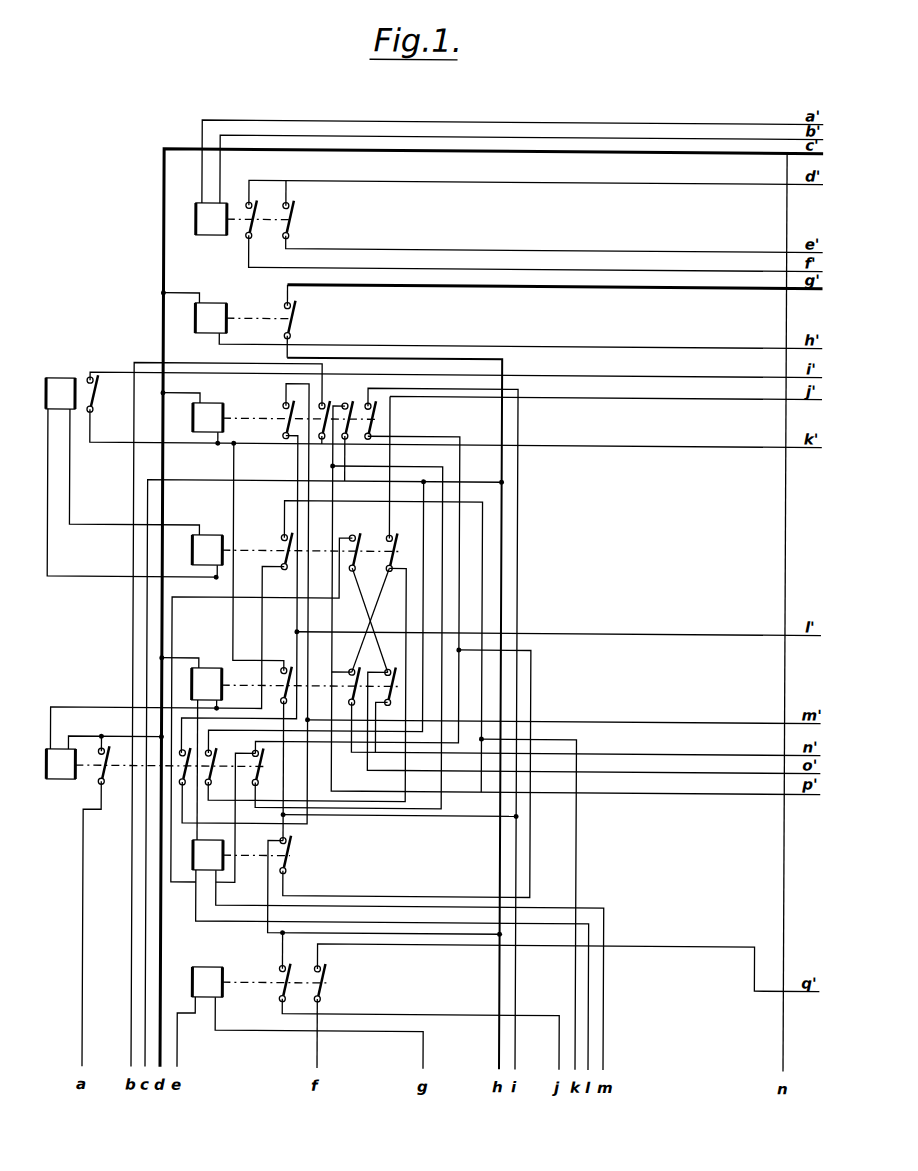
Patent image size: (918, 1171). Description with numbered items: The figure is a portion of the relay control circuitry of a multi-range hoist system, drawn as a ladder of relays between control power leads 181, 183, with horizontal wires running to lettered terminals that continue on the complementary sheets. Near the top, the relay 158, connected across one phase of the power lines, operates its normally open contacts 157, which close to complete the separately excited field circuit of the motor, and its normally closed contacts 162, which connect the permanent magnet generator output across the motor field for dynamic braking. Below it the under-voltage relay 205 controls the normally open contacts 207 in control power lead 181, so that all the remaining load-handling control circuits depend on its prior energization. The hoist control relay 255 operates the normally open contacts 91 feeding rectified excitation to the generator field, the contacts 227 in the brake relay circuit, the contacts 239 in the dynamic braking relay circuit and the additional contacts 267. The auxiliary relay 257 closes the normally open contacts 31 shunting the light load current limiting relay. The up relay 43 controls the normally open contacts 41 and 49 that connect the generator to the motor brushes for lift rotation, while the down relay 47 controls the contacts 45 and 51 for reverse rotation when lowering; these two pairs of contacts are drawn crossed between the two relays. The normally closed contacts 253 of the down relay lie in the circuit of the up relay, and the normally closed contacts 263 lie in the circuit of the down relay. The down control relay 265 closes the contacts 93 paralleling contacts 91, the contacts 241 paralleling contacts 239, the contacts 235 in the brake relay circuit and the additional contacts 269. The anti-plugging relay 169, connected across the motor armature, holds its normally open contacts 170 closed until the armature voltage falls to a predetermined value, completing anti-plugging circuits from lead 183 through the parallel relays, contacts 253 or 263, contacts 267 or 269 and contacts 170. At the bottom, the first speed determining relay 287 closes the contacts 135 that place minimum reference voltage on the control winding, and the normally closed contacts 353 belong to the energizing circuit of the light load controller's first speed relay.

The normally open contacts 31 is at (87, 378).
The normally open contacts 41 is at (393, 534).
The up relay 43 is at (218, 557).
The normally open contacts 45 is at (391, 668).
The down relay 47 is at (218, 691).
The normally open contacts 49 is at (359, 526).
The normally open contacts 51 is at (350, 669).
The normally open contacts 91 is at (283, 403).
The normally open contacts 93 is at (186, 750).
The normally open contacts 135 is at (323, 966).
The normally open contacts 157 is at (289, 203).
The relay 158 is at (222, 227).
The normally closed contacts 162 is at (256, 192).
The anti-plugging relay 169 is at (222, 862).
The normally open contacts 170 is at (282, 838).
The control power lead 181 is at (572, 289).
The control power lead 183 is at (437, 152).
The under-voltage relay 205 is at (222, 326).
The normally open contacts 207 is at (284, 302).
The normally open contacts 227 is at (324, 402).
The normally open contacts 235 is at (116, 737).
The normally open contacts 239 is at (351, 394).
The normally open contacts 241 is at (212, 750).
The normally closed contacts 253 is at (293, 653).
The hoist control relay 255 is at (220, 425).
The auxiliary relay 257 is at (72, 402).
The normally closed contacts 263 is at (282, 534).
The down control relay 265 is at (74, 772).
The normally open contacts 267 is at (371, 405).
The normally open contacts 269 is at (262, 745).
The first speed determining relay 287 is at (222, 989).
The normally closed contacts 353 is at (283, 965).